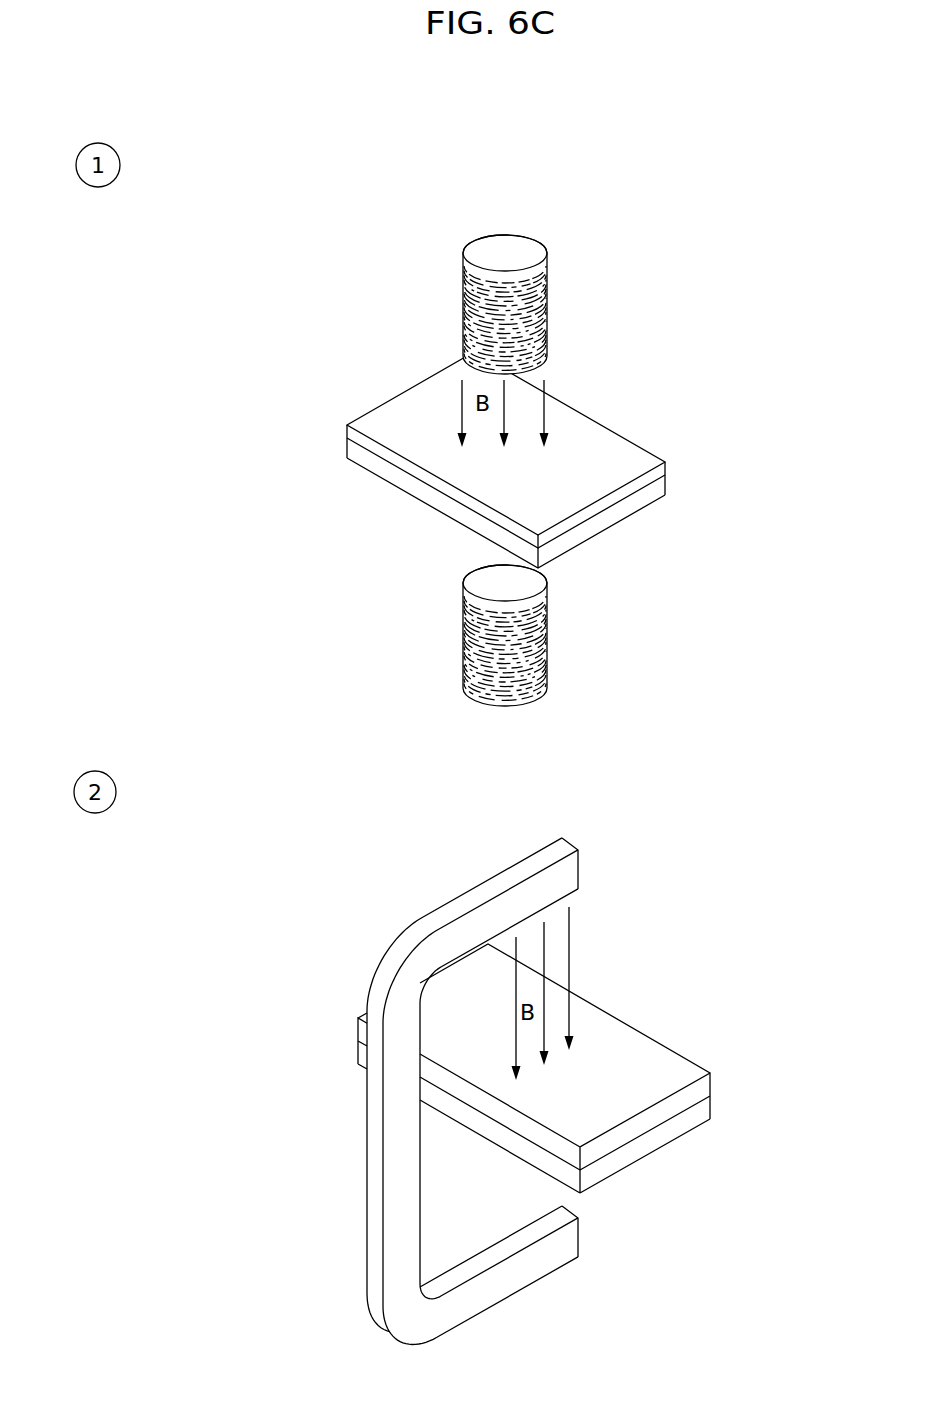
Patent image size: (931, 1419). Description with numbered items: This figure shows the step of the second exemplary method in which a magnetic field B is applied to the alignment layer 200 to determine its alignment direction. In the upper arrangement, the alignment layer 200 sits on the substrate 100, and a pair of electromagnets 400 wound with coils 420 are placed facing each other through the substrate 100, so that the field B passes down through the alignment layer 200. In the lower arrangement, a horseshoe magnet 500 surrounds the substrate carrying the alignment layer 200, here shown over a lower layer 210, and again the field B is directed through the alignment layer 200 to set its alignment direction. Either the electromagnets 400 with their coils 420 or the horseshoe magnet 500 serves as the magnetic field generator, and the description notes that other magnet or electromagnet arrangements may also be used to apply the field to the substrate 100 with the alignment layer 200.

The substrate 100 is at (347, 448).
The alignment layer 200 is at (347, 428).
The base layer 210 is at (712, 1113).
The electromagnet 400 is at (531, 247).
The coil 420 is at (547, 322).
The horseshoe magnet 500 is at (569, 871).